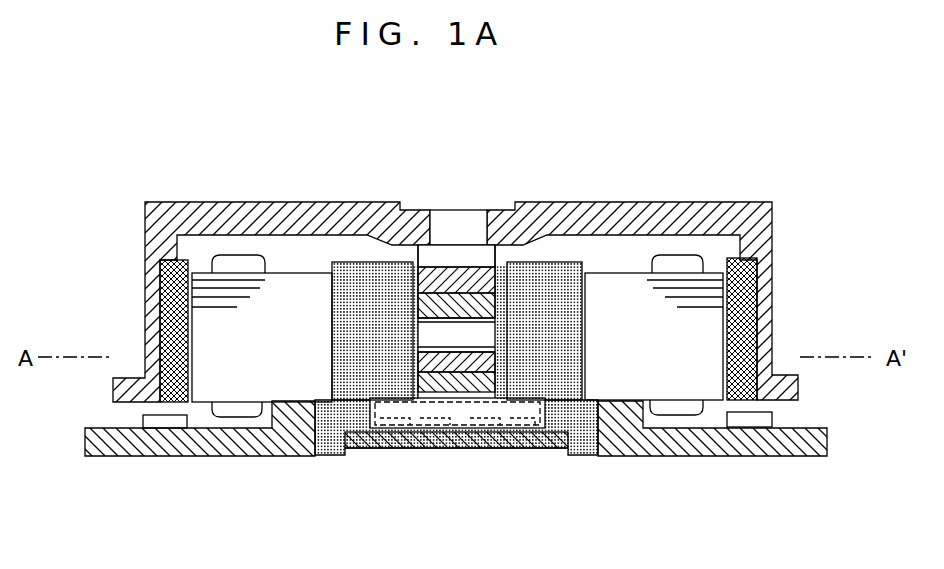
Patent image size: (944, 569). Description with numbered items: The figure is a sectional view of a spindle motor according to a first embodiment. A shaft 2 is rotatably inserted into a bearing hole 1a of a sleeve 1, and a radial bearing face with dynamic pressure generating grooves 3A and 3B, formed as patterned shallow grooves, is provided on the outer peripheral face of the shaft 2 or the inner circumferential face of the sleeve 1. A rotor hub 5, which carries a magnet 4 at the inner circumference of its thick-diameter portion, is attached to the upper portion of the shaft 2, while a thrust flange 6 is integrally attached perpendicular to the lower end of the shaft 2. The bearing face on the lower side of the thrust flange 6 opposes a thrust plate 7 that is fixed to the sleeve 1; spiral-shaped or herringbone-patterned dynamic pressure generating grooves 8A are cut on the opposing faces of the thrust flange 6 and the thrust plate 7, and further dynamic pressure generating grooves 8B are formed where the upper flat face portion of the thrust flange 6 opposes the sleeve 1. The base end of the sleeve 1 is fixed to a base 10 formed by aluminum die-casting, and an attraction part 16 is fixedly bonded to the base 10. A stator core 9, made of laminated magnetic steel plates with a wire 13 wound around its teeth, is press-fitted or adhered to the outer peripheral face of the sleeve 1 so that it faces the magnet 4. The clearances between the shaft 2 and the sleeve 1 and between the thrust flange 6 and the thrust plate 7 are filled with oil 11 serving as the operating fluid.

The sleeve 1 is at (547, 278).
The bearing hole 1a is at (493, 335).
The shaft 2 is at (448, 257).
The dynamic pressure generating grooves 3A is at (421, 286).
The dynamic pressure generating grooves 3B is at (432, 386).
The magnet 4 is at (760, 290).
The rotor hub 5 is at (678, 222).
The thrust flange 6 is at (460, 410).
The thrust plate 7 is at (367, 450).
The dynamic pressure generating grooves 8A is at (492, 440).
The dynamic pressure generating grooves 8B is at (547, 440).
The stator core 9 is at (680, 378).
The base 10 is at (703, 443).
The oil 11 is at (418, 280).
The wire 13 is at (690, 255).
The attraction part 16 is at (765, 421).